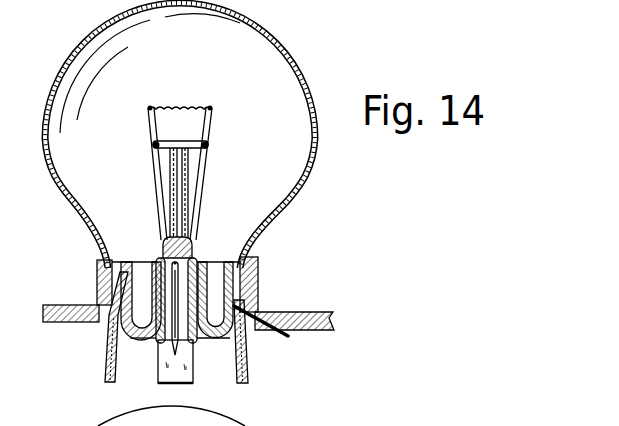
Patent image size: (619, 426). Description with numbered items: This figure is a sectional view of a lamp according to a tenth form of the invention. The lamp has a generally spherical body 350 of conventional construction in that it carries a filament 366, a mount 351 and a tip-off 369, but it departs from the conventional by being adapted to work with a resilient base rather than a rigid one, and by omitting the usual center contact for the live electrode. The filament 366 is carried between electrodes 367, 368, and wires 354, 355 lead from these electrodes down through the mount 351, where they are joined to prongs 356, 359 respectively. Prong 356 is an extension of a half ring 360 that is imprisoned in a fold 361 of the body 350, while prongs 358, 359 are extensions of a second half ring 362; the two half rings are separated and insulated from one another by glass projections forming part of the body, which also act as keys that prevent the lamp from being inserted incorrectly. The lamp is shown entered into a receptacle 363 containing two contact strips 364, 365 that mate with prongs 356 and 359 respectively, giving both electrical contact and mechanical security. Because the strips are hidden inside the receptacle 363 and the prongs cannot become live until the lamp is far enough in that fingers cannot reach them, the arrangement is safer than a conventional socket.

The body 350 is at (307, 176).
The mount 351 is at (192, 240).
The wire 354 is at (146, 338).
The wire 355 is at (212, 340).
The prong 356 is at (103, 350).
The prong 358 is at (193, 382).
The prong 359 is at (253, 358).
The half ring 360 is at (96, 275).
The fold 361 is at (117, 262).
The half ring 362 is at (258, 281).
The receptacle 363 is at (329, 311).
The contact strip 364 is at (258, 303).
The contact strip 365 is at (98, 300).
The filament 366 is at (204, 106).
The electrode 367 is at (148, 125).
The electrode 368 is at (210, 128).
The tip-off 369 is at (174, 350).